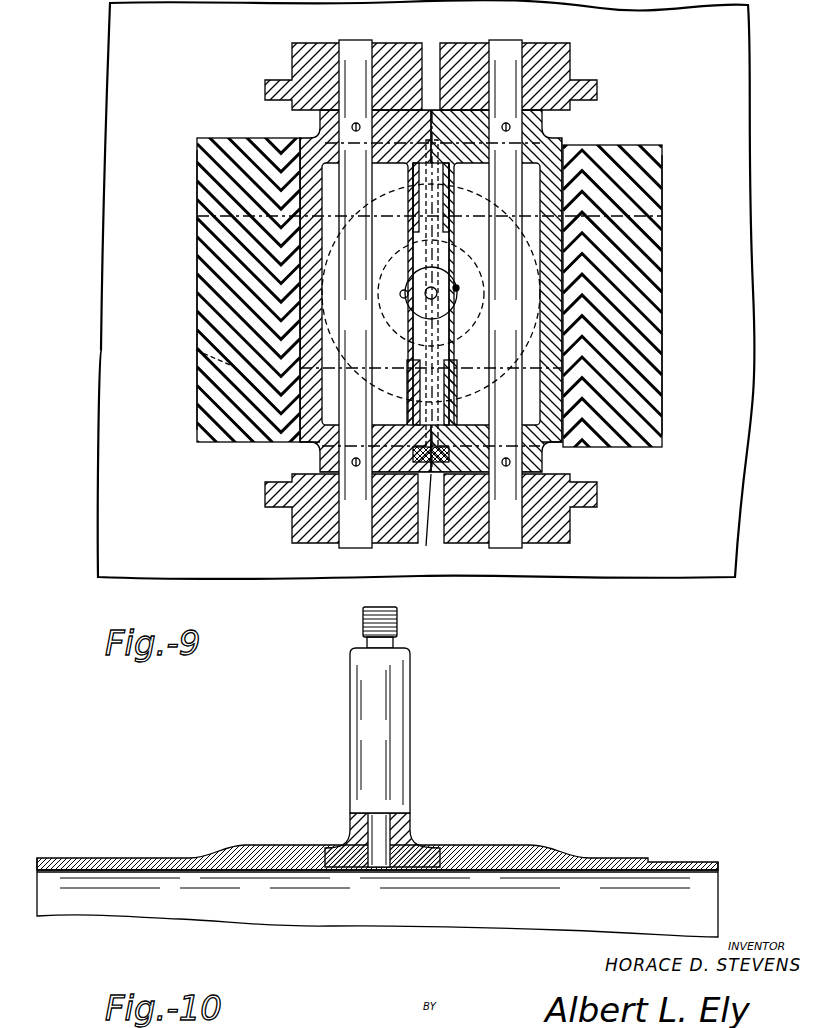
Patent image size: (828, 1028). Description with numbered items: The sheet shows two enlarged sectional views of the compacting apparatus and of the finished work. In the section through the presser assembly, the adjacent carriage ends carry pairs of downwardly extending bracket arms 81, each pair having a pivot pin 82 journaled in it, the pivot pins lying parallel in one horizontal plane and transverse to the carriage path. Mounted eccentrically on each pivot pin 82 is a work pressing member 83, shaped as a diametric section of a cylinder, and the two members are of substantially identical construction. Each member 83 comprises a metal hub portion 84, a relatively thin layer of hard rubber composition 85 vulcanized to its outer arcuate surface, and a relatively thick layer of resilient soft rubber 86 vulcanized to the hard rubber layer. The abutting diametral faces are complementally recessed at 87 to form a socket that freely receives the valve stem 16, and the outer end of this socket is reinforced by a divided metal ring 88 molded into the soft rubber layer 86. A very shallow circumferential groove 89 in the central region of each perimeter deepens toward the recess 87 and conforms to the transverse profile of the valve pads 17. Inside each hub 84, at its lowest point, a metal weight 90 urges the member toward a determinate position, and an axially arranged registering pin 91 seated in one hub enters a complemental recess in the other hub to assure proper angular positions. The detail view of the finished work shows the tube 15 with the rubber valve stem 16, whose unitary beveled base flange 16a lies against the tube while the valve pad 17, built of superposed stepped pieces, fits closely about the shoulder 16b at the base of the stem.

In FIG. 9, the tube 15 is at (110, 538).
In FIG. 10, the tube 15 is at (705, 898).
In FIG. 10, the rubber valve stem 16 is at (361, 714).
In FIG. 10, the base flange 16a is at (494, 857).
In FIG. 10, the shoulder 16b is at (420, 848).
In FIG. 10, the valve pad 17 is at (188, 856).
In FIG. 9, the bracket arms 81 is at (313, 57).
In FIG. 9, the pivot pin 82 is at (360, 46).
In FIG. 9, the work pressing member 83 is at (184, 396).
In FIG. 9, the metal hub portion 84 is at (320, 444).
In FIG. 9, the hard rubber composition layer 85 is at (296, 442).
In FIG. 9, the resilient soft rubber layer 86 is at (212, 415).
In FIG. 9, the radial recess 87 is at (457, 286).
In FIG. 9, the divided metal ring 88 is at (450, 345).
In FIG. 9, the circumferential groove 89 is at (196, 350).
In FIG. 9, the metal weight 90 is at (408, 392).
In FIG. 9, the registering pin 91 is at (429, 524).